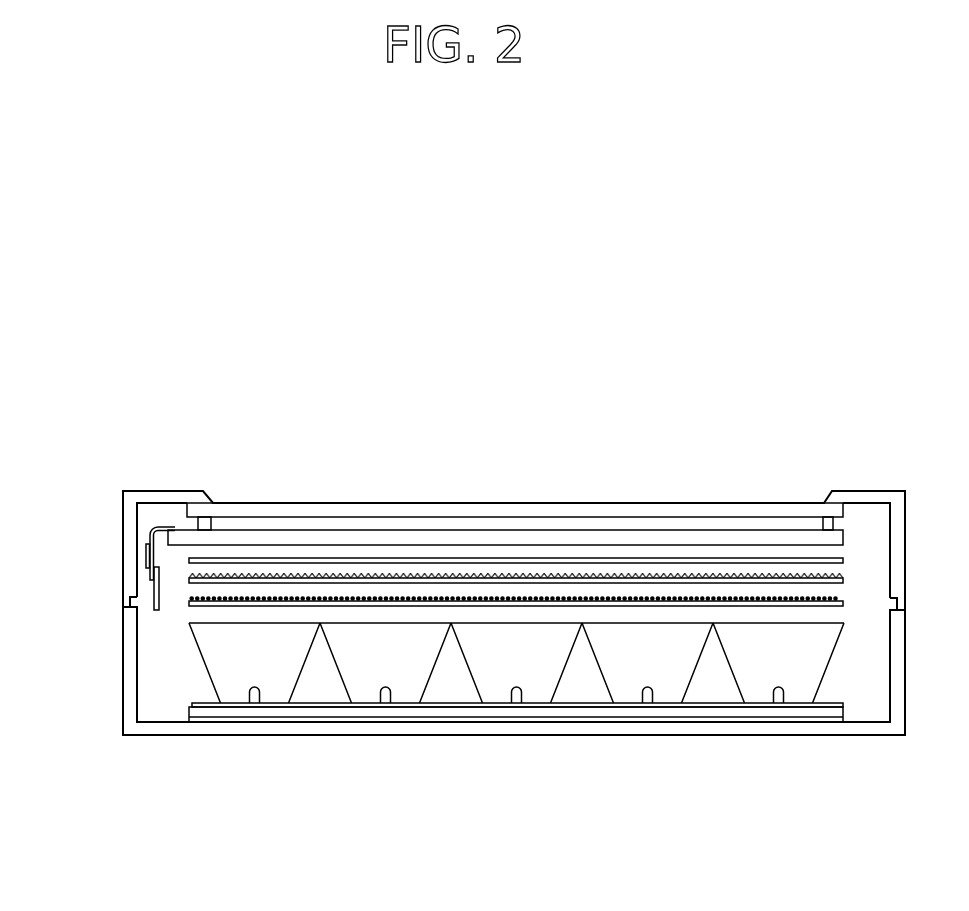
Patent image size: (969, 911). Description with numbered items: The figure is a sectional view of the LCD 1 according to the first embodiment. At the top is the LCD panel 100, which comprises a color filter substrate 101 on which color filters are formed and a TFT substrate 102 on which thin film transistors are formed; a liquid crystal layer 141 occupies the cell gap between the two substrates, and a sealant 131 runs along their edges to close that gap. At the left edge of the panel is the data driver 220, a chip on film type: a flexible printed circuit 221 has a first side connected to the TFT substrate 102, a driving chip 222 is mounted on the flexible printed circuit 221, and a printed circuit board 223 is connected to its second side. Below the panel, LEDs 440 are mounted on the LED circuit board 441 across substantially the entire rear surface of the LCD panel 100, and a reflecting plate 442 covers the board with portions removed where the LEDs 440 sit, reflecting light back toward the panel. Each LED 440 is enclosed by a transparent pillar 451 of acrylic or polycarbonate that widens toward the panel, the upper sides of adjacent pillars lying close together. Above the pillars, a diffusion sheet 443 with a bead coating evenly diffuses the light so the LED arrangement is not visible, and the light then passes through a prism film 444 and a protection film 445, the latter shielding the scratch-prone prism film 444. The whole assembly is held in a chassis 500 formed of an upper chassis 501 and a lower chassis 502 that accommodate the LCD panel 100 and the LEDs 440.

The LCD 1 is at (559, 366).
The LCD panel 100 is at (652, 418).
The color filter substrate 101 is at (643, 510).
The TFT substrate 102 is at (695, 537).
The sealant 131 is at (828, 520).
The liquid crystal layer 141 is at (757, 523).
The data driver 220 is at (102, 418).
The flexible printed circuit 221 is at (172, 526).
The driving chip 222 is at (146, 544).
The printed circuit board 223 is at (154, 592).
The LED 440 is at (387, 703).
The LED circuit board 441 is at (300, 713).
The reflecting plate 442 is at (447, 704).
The diffusion sheet 443 is at (545, 605).
The prism film 444 is at (630, 584).
The protection film 445 is at (757, 563).
The transparent pillar 451 is at (197, 638).
The chassis 500 is at (50, 573).
The upper chassis 501 is at (122, 567).
The lower chassis 502 is at (123, 642).